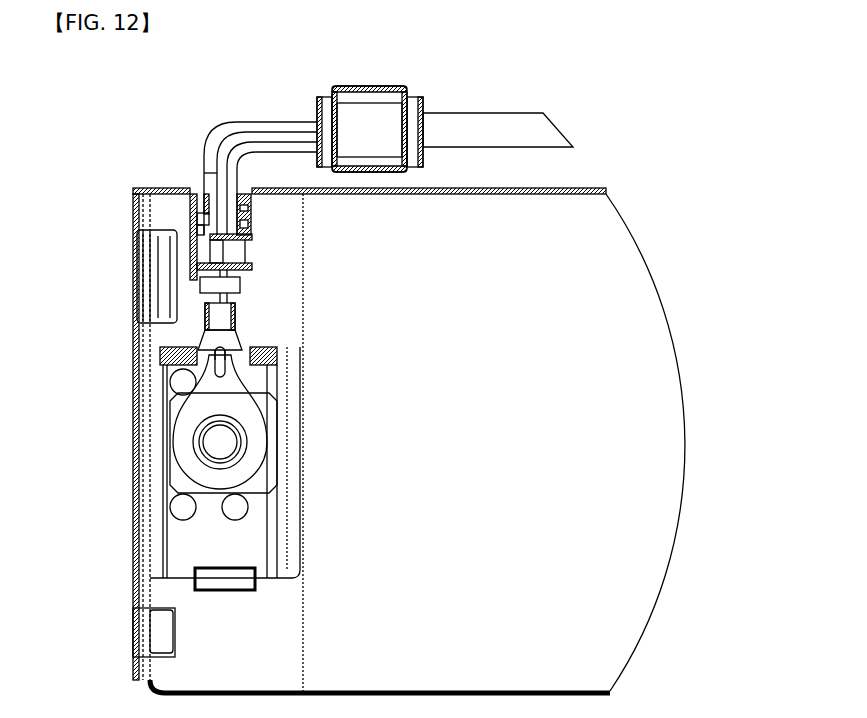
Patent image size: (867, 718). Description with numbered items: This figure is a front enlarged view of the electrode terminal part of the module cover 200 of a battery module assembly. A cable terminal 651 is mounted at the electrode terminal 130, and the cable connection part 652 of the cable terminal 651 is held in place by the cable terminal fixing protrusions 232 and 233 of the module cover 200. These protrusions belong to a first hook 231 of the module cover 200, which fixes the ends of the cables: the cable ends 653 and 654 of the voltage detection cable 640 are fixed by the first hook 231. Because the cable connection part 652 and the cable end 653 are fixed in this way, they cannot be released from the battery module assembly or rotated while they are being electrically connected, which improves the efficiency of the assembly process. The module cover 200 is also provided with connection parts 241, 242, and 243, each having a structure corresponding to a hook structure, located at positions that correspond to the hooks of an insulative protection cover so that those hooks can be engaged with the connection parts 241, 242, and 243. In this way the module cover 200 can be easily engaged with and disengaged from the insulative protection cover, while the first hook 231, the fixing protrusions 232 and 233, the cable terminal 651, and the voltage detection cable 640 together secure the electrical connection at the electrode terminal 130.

The module cover 200 is at (627, 441).
The voltage detection cable 640 is at (473, 138).
The cable end 653 is at (283, 270).
The cable end 654 is at (204, 158).
The first hook 231 is at (222, 254).
The cable terminal fixing protrusion 232 is at (197, 297).
The cable terminal fixing protrusion 233 is at (197, 323).
The connection part 241 is at (178, 357).
The connection part 242 is at (263, 366).
The cable connection part 652 is at (257, 305).
The cable terminal 651 is at (218, 398).
The electrode terminal 130 is at (218, 447).
The connection part 243 is at (220, 584).